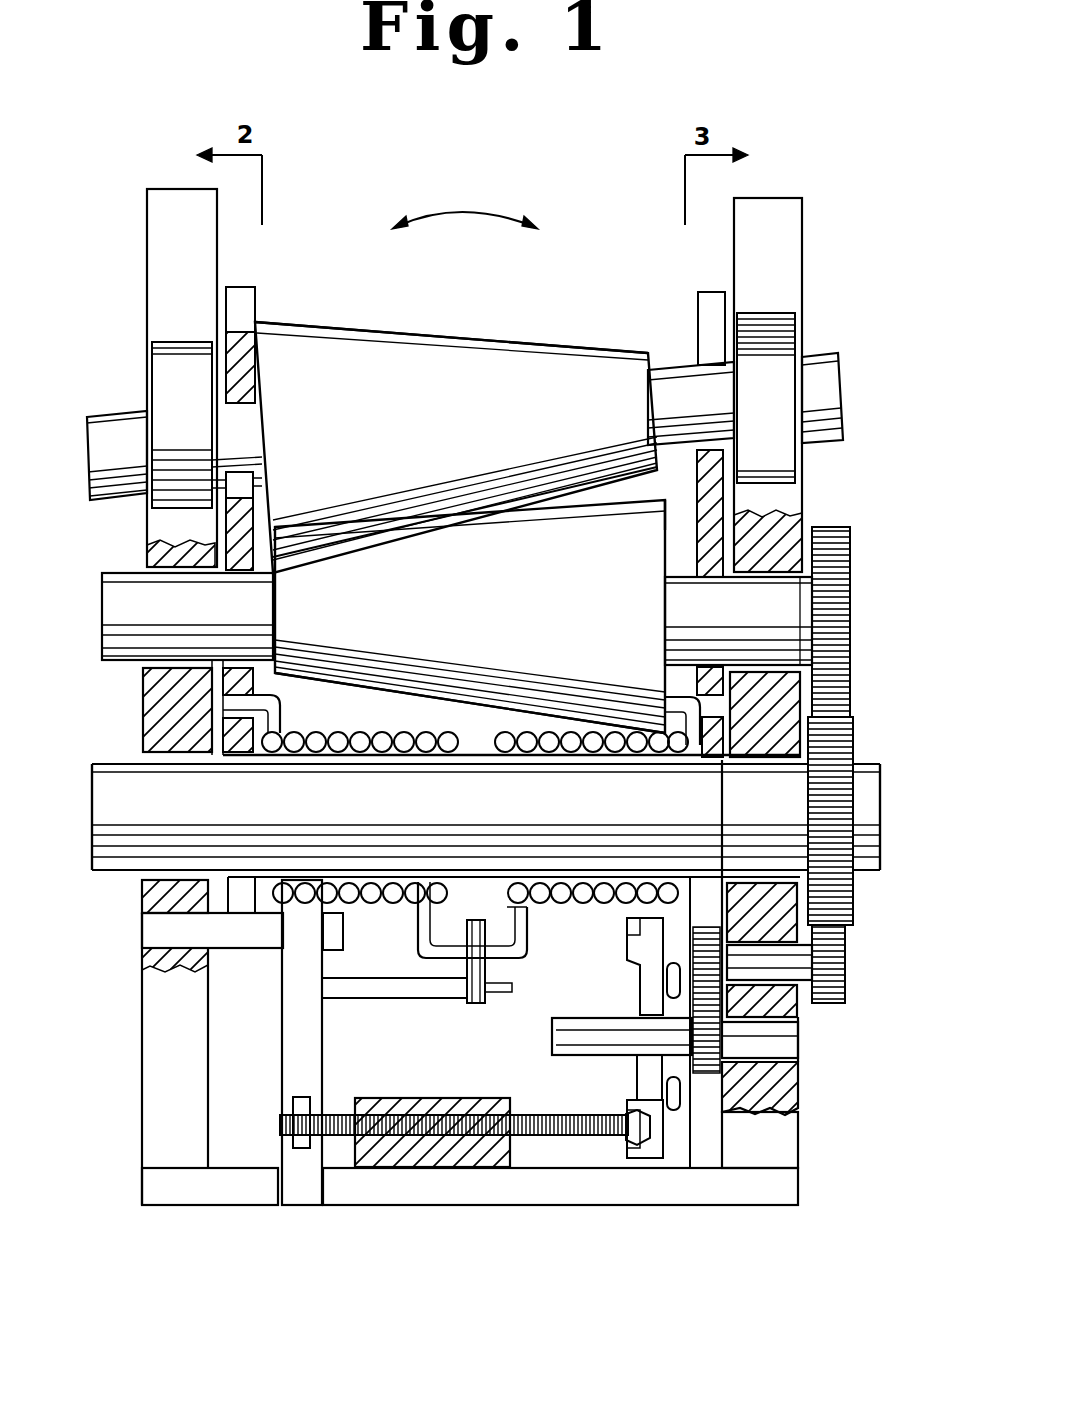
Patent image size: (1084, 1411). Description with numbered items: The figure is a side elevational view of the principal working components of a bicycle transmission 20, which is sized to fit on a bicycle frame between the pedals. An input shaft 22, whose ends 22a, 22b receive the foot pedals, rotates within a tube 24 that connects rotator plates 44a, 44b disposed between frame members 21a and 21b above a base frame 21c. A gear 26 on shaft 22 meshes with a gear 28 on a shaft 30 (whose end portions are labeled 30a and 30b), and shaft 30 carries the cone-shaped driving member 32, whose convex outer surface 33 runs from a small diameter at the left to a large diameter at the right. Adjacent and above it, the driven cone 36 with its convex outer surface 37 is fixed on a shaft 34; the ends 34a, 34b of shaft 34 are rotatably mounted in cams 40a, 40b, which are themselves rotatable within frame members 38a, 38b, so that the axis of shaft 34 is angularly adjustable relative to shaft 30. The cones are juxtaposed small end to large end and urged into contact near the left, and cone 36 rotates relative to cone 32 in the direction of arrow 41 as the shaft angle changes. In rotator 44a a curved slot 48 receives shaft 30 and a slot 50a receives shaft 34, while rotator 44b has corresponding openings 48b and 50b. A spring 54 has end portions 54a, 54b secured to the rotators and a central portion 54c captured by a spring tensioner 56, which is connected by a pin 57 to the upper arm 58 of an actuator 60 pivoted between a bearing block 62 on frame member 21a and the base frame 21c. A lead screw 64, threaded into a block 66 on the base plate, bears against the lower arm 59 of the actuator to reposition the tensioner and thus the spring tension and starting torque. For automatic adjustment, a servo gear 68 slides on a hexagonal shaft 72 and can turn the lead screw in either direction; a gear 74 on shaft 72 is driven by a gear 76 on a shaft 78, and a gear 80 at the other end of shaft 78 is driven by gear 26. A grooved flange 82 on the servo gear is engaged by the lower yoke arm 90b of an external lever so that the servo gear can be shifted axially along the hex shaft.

The bicycle transmission 20 is at (137, 162).
The arrow 41 is at (447, 213).
The frame member 38a is at (145, 290).
The frame member 38b is at (773, 253).
The cam 40a is at (145, 395).
The cam 40b is at (778, 462).
The shaft 34 is at (683, 390).
The end of shaft 34a is at (92, 470).
The end of shaft 34b is at (830, 390).
The rotator plate 44a is at (243, 290).
The rotator plate 44b is at (712, 290).
The curved slot 48 is at (275, 577).
The opening 48b is at (697, 548).
The slot 50a is at (240, 412).
The opening 50b is at (665, 505).
The driven cone 36 is at (428, 428).
The outer surface 37 is at (478, 330).
The driving cone 32 is at (480, 613).
The outer surface 33 is at (352, 678).
The shaft 30 is at (760, 623).
The first cone shaft left end 30a is at (100, 613).
The first cone shaft right end 30b is at (800, 602).
The gear 28 is at (838, 560).
The gear 26 is at (853, 742).
The gear 80 is at (848, 962).
The input shaft 22 is at (120, 797).
The end of input shaft 22a is at (92, 832).
The end of input shaft 22b is at (880, 820).
The tube 24 is at (313, 765).
The frame member 21a is at (143, 720).
The frame member 21b is at (775, 697).
The base frame 21c is at (195, 1195).
The spring 54 is at (360, 737).
The spring end portion 54a is at (272, 697).
The spring end portion 54b is at (687, 707).
The spring central portion 54c is at (425, 915).
The gear 76 is at (690, 876).
The bearing block 62 is at (258, 950).
The actuator 60 is at (292, 1028).
The upper arm 58 is at (355, 990).
The pin 57 is at (481, 1003).
The spring tensioner 56 is at (540, 952).
The servo gear 68 is at (655, 1007).
The hexagonal shaft 72 is at (550, 1027).
The gear 74 is at (800, 1068).
The shaft 78 is at (805, 983).
The flange 82 is at (685, 1080).
The lower yoke arm 90b is at (677, 1163).
The lead screw 64 is at (342, 1100).
The lower arm 59 is at (280, 1110).
The block 66 is at (480, 1100).